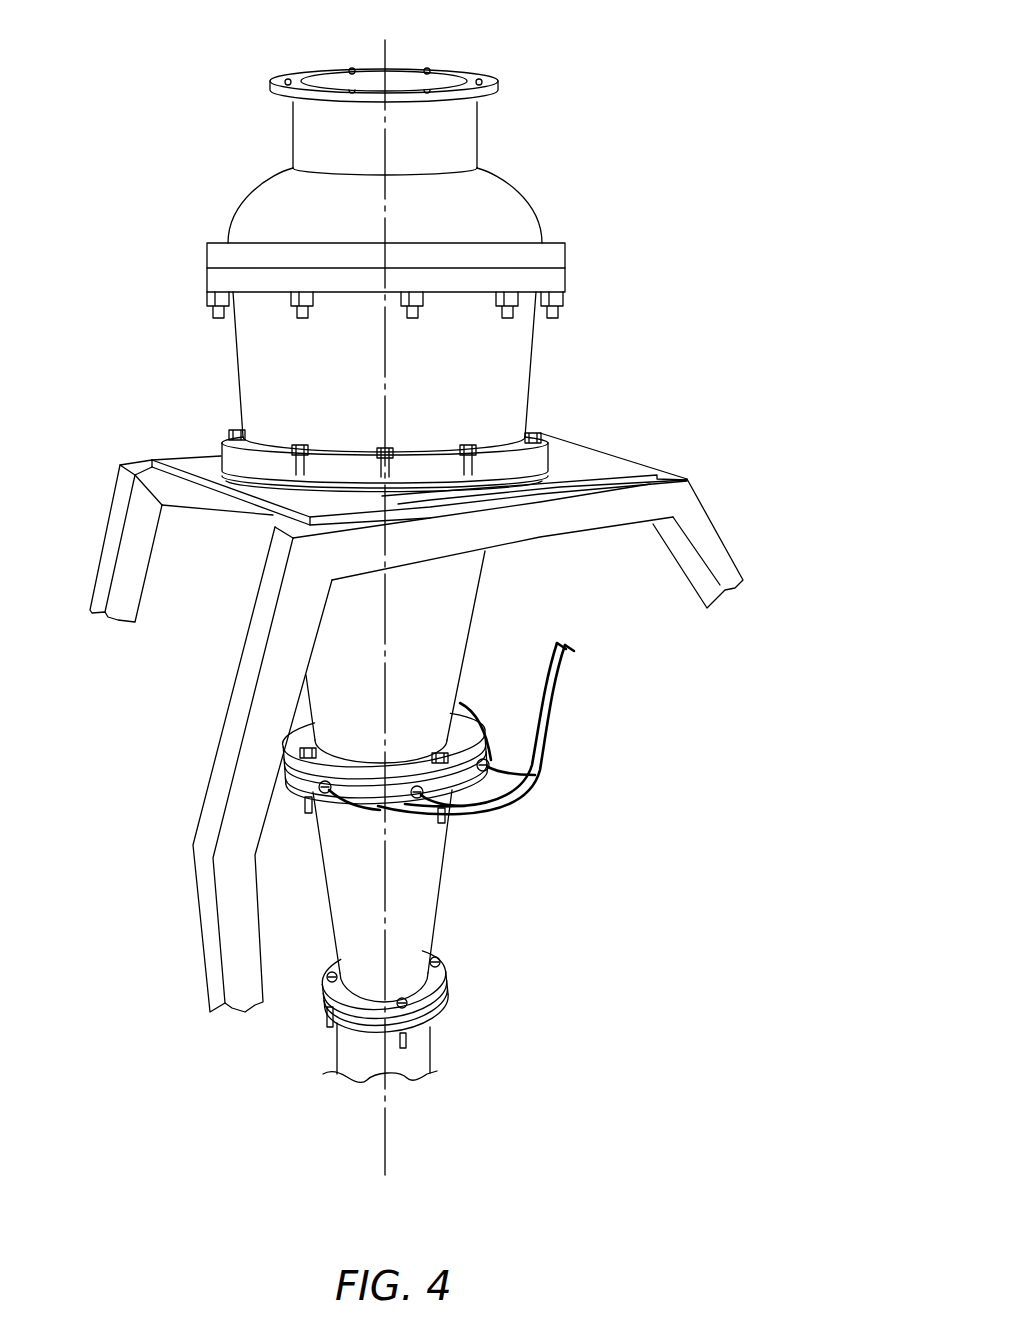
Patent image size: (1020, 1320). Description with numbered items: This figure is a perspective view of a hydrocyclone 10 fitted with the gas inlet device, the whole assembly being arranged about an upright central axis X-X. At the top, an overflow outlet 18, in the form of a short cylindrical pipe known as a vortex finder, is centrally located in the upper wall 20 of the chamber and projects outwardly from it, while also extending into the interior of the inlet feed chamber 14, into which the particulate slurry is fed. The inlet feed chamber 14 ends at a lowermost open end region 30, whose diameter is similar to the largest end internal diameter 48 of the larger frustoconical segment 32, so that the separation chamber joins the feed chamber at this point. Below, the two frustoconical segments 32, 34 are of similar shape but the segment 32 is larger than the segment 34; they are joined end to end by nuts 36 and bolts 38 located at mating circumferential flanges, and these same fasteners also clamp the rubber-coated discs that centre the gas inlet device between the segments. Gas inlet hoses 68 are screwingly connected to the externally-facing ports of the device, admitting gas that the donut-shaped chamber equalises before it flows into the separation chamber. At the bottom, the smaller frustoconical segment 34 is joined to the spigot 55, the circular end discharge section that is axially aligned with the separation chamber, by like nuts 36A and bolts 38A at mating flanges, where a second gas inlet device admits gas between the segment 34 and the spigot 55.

The hydrocyclone 10 is at (439, 603).
The inlet feed chamber 14 is at (483, 370).
The overflow outlet 18 is at (455, 150).
The upper wall 20 is at (487, 205).
The lowermost open end region 30 is at (549, 447).
The frustoconical segment 32 is at (430, 690).
The frustoconical segment 34 is at (410, 908).
The nuts 36 is at (487, 740).
The nuts 36A is at (450, 1002).
The bolts 38 is at (450, 821).
The bolts 38A is at (405, 1038).
The largest end internal diameter 48 is at (557, 477).
The spigot 55 is at (415, 1060).
The gas inlet hoses 68 is at (348, 817).